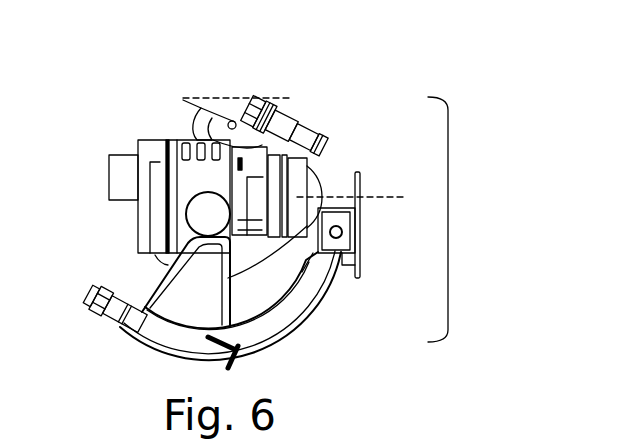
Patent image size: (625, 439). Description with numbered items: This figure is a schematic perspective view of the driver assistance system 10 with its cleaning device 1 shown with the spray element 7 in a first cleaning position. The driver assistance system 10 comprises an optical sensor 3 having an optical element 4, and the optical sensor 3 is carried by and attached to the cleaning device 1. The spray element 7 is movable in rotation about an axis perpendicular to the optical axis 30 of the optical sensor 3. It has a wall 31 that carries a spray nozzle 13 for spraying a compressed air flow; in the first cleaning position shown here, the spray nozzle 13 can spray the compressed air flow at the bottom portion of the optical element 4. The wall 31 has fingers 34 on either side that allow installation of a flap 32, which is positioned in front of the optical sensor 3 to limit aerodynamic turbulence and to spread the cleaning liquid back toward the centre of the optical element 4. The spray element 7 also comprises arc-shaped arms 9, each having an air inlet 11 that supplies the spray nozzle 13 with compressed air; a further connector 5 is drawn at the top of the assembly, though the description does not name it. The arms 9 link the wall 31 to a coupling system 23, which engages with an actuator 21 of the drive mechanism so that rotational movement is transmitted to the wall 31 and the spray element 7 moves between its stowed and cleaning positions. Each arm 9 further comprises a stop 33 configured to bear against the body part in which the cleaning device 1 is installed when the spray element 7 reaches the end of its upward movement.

The cleaning device 1 is at (448, 216).
The optical sensor 3 is at (158, 161).
The optical element 4 is at (320, 173).
The electrical connector 5 is at (243, 97).
The spray element 7 is at (294, 330).
The arms 9 is at (143, 324).
The driver assistance system 10 is at (508, 118).
The air inlet 11 is at (97, 290).
The spray nozzle 13 is at (355, 222).
The actuator 21 is at (188, 108).
The coupling system 23 is at (204, 209).
The optical axis 30 is at (365, 200).
The wall 31 is at (330, 293).
The flap 32 is at (360, 212).
The stop 33 is at (220, 358).
The fingers 34 is at (342, 231).